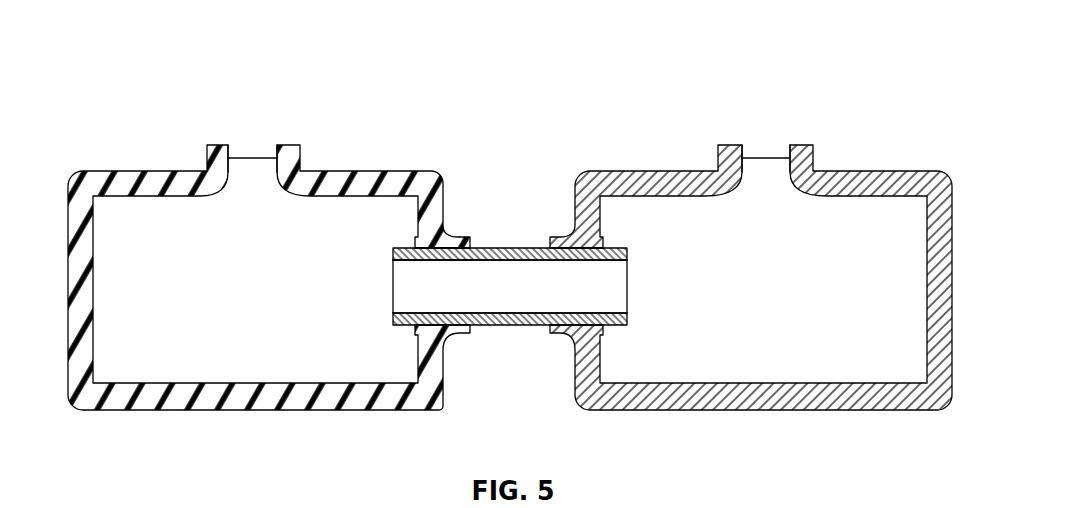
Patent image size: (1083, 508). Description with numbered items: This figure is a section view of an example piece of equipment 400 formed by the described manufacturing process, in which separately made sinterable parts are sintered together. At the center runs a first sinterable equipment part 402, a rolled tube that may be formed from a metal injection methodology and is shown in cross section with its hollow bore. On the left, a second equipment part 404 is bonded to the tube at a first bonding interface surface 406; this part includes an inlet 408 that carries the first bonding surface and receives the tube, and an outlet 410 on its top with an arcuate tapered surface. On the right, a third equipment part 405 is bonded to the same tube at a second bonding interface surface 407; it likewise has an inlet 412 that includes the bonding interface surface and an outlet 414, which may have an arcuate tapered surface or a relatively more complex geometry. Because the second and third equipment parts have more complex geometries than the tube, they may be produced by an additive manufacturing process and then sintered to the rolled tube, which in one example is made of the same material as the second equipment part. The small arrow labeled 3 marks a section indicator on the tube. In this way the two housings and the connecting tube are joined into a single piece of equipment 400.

The piece of equipment 400 is at (752, 68).
The first sinterable equipment part 402 is at (493, 247).
The section view indicator 3 is at (527, 238).
The second equipment part 404 is at (103, 171).
The third equipment part 405 is at (912, 172).
The first bonding interface surface 406 is at (446, 262).
The second bonding interface surface 407 is at (569, 261).
The inlet 408 is at (430, 257).
The outlet 410 is at (272, 149).
The inlet 412 is at (568, 261).
The outlet 414 is at (788, 154).